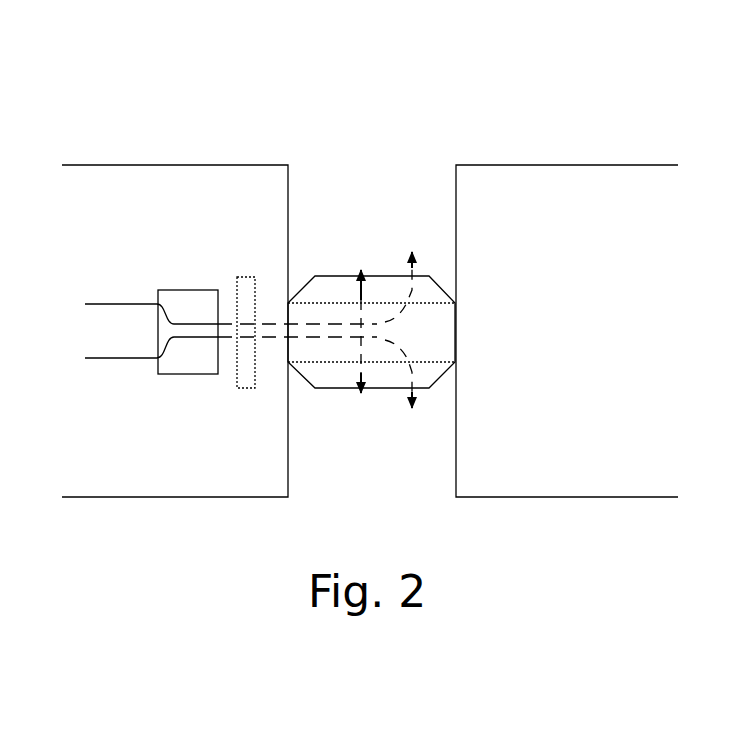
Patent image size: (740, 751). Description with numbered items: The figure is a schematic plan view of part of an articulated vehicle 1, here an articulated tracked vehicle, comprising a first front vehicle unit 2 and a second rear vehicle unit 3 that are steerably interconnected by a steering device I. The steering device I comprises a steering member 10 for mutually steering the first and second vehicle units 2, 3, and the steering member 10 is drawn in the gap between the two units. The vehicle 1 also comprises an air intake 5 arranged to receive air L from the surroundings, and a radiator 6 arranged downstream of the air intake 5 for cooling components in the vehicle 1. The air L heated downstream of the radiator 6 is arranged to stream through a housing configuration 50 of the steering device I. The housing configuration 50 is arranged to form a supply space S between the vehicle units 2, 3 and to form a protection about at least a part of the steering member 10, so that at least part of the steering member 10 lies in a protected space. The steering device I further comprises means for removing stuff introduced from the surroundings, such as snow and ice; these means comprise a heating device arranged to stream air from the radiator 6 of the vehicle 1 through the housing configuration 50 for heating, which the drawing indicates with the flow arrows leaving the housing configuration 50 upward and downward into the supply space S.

The articulated vehicle 1 is at (370, 261).
The first front vehicle unit 2 is at (158, 162).
The second rear vehicle unit 3 is at (583, 163).
The air intake 5 is at (190, 384).
The radiator 6 is at (247, 276).
The steering member 10 is at (338, 370).
The housing configuration 50 is at (342, 276).
The air L is at (141, 331).
The supply space S is at (423, 348).
The steering device I is at (300, 376).